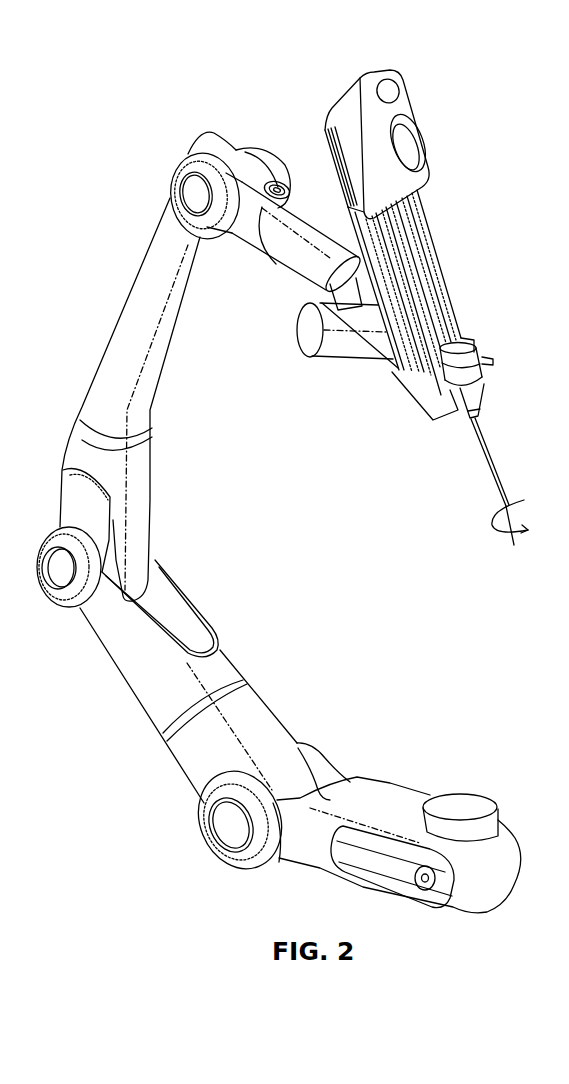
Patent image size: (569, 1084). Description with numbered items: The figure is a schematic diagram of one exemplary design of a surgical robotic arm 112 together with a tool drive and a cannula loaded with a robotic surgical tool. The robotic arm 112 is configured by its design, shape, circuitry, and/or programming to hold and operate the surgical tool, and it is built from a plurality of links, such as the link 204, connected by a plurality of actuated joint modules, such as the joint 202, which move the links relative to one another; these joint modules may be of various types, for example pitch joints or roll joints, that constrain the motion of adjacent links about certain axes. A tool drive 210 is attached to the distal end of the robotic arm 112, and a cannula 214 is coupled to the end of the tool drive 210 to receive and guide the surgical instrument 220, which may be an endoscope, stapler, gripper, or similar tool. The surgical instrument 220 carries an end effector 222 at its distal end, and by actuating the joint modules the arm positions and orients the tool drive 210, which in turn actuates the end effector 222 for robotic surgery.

The robotic arm 112 is at (90, 232).
The joint 202 is at (157, 543).
The link 204 is at (158, 343).
The tool drive 210 is at (352, 102).
The cannula 214 is at (478, 348).
The surgical instrument 220 is at (430, 245).
The end effector 222 is at (513, 533).